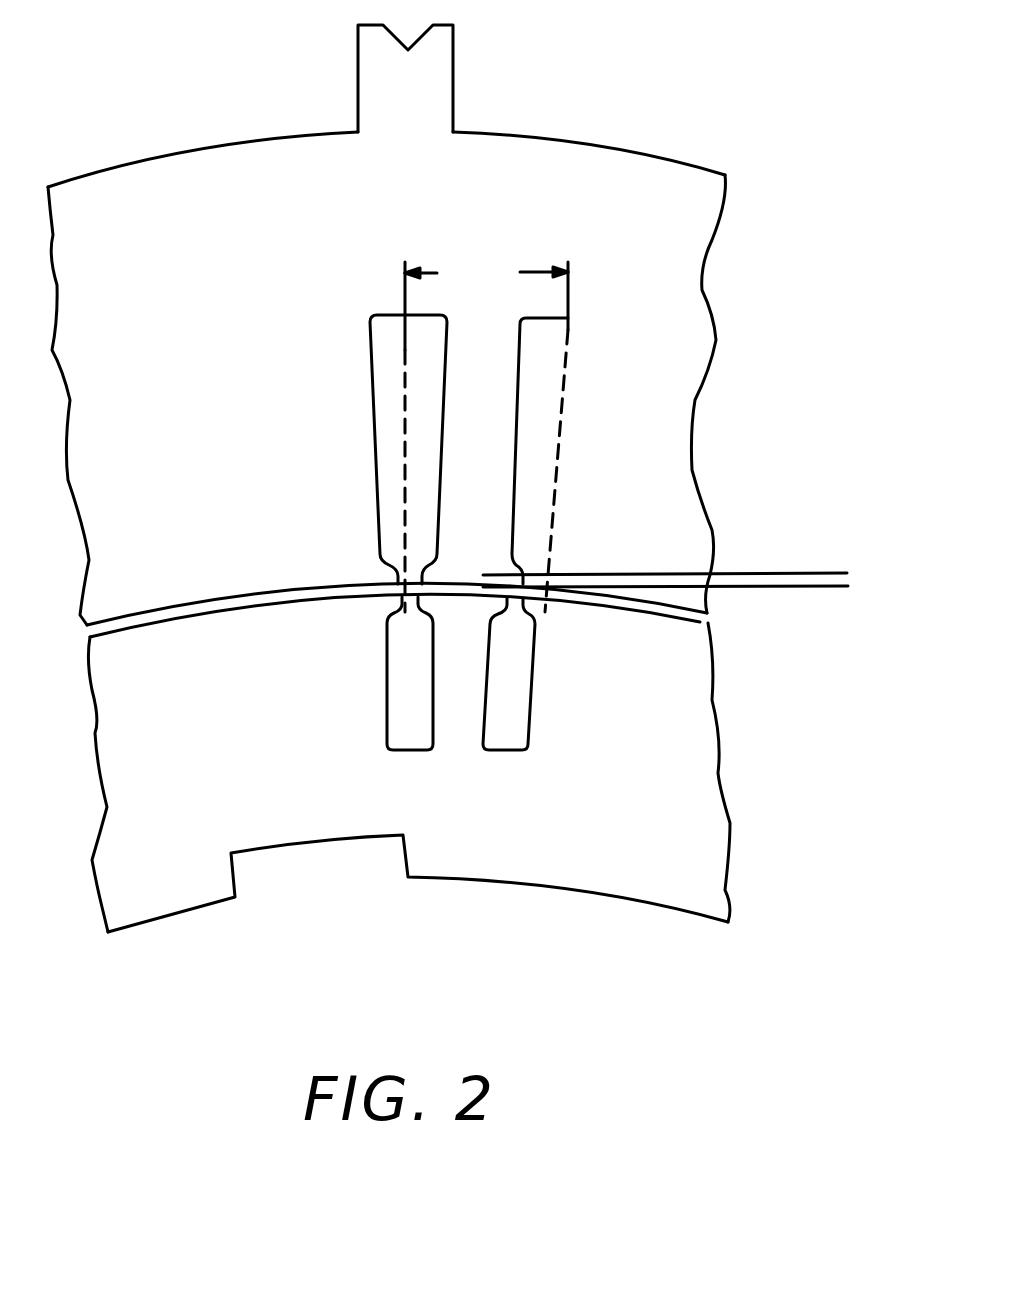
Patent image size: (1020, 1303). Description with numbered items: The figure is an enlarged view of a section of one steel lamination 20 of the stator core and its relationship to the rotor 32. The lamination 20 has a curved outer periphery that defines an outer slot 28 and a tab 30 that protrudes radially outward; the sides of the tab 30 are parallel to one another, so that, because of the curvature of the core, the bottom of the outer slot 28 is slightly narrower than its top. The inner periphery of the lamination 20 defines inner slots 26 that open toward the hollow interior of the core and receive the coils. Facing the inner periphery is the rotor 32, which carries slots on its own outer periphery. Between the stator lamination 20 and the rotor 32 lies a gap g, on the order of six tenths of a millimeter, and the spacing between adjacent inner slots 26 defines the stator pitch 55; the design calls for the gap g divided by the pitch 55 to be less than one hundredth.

The steel lamination 20 is at (424, 325).
The inner slot 26 is at (388, 422).
The outer slot 28 is at (620, 148).
The tab 30 is at (453, 72).
The rotor 32 is at (707, 782).
The stator pitch 55 is at (445, 250).
The gap g is at (847, 573).